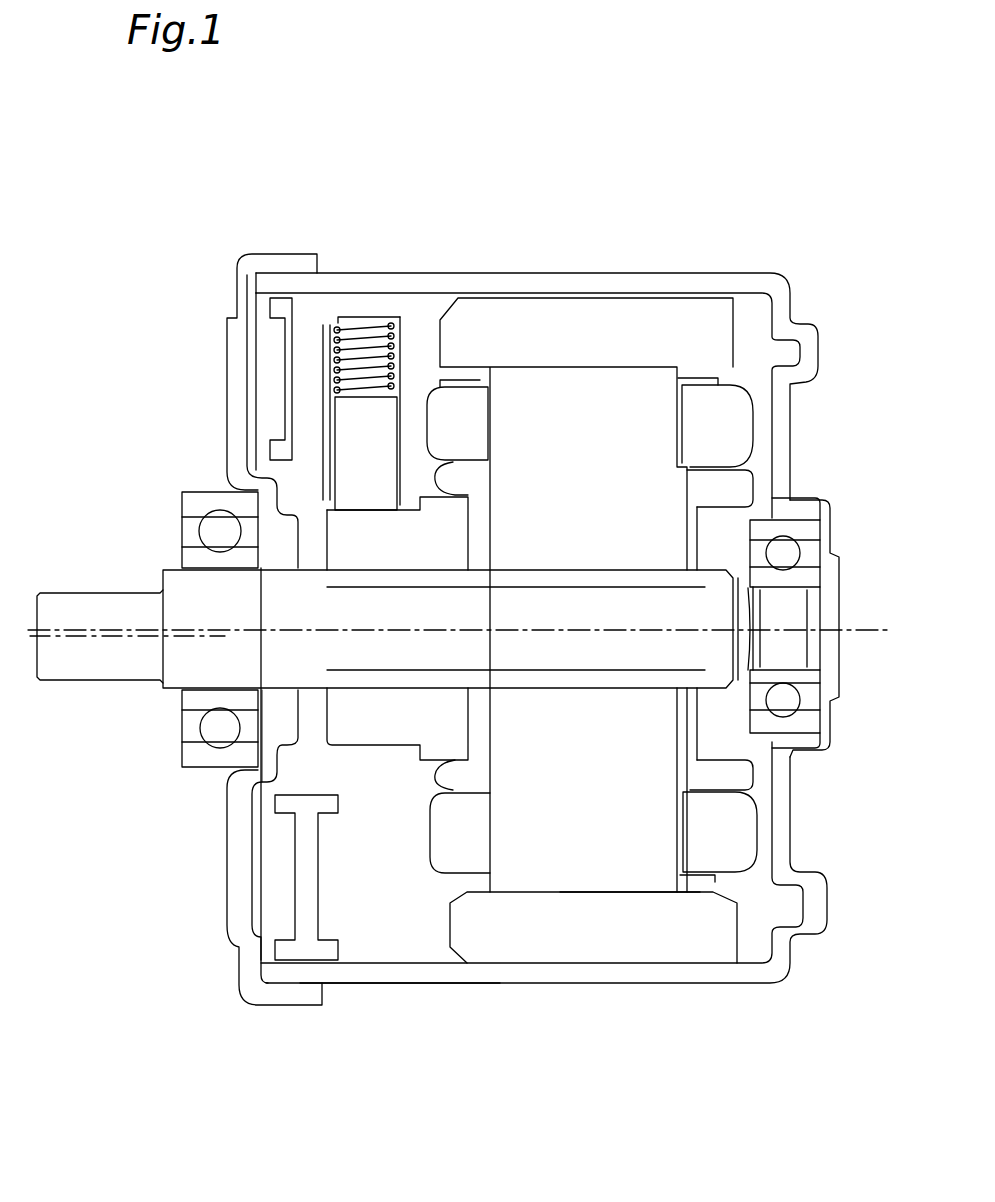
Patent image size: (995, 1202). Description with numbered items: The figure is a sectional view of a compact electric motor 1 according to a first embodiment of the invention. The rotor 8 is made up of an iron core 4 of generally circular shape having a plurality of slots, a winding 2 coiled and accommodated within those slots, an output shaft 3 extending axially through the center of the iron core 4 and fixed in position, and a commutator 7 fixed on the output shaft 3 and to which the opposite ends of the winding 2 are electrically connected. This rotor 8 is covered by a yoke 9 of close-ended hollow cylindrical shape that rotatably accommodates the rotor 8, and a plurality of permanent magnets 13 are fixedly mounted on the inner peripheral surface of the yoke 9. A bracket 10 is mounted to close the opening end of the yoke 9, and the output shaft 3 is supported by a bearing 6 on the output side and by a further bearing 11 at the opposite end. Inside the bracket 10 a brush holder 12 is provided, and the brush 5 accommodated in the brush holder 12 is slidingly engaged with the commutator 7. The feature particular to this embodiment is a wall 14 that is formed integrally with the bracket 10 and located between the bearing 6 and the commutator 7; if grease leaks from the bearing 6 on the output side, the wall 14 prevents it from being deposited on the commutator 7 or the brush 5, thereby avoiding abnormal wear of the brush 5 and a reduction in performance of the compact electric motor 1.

The compact electric motor 1 is at (447, 1002).
The winding 2 is at (455, 845).
The output shaft 3 is at (88, 672).
The iron core 4 is at (555, 860).
The brush 5 is at (352, 458).
The bearing 6 is at (218, 732).
The commutator 7 is at (370, 730).
The rotor 8 is at (640, 903).
The yoke 9 is at (580, 975).
The bracket 10 is at (238, 987).
The bearing 11 is at (788, 712).
The brush holder 12 is at (300, 935).
The permanent magnet 13 is at (702, 950).
The wall 14 is at (287, 712).